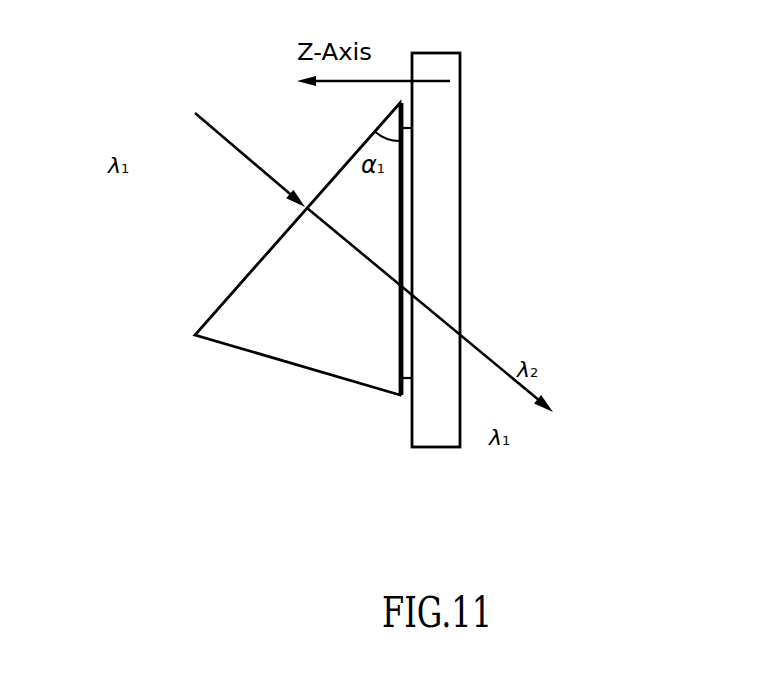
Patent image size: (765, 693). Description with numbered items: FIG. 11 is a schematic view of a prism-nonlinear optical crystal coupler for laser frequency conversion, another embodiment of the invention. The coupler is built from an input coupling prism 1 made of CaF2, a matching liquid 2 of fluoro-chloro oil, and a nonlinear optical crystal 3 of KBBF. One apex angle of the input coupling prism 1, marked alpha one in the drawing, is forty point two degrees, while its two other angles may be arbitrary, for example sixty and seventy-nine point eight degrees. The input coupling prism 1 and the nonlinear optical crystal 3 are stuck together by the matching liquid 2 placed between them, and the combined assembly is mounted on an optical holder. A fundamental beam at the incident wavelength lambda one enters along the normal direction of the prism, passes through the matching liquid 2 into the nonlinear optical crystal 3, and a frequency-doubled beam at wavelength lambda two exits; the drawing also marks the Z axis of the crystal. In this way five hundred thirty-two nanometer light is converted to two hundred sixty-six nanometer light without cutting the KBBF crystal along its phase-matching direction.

The input coupling prism 1 is at (294, 280).
The matching liquid 2 is at (402, 395).
The nonlinear optical crystal 3 is at (435, 363).